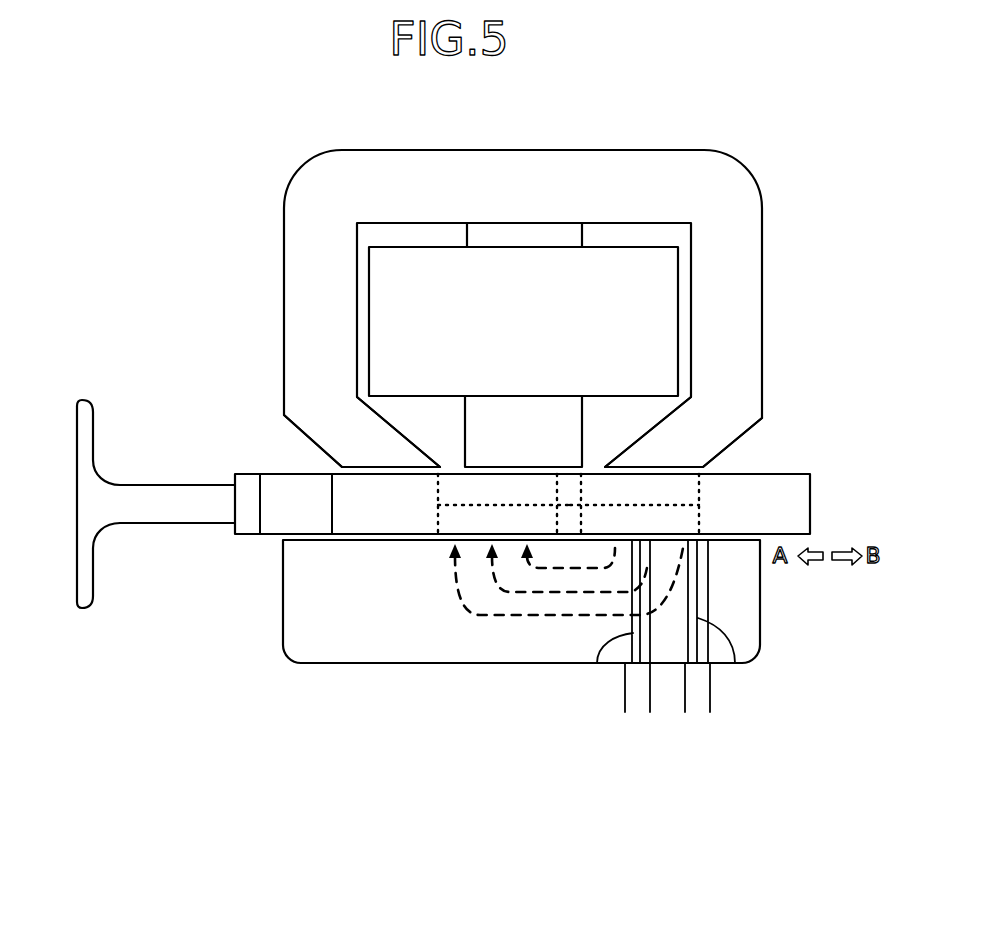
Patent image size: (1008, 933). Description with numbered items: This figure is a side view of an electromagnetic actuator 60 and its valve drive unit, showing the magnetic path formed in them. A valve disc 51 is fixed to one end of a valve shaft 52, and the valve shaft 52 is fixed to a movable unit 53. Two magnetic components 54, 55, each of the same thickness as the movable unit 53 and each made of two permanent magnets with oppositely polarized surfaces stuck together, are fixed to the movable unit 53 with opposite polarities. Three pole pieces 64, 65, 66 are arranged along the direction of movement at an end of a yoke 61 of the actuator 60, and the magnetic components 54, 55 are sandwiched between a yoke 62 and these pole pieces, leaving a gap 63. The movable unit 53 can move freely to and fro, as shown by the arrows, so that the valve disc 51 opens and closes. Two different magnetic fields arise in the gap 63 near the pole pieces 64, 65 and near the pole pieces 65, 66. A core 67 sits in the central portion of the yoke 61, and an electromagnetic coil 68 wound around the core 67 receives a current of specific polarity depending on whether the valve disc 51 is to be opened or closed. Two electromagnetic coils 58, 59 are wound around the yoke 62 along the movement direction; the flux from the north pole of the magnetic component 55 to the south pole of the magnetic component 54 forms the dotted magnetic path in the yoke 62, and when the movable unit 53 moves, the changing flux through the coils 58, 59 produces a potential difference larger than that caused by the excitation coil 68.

The valve disc 51 is at (82, 400).
The valve shaft 52 is at (165, 508).
The movable unit 53 is at (268, 517).
The magnetic component 54 is at (452, 518).
The magnetic component 55 is at (600, 518).
The electromagnetic coil 58 is at (735, 663).
The electromagnetic coil 59 is at (596, 663).
The actuator 60 is at (727, 138).
The yoke 61 is at (643, 163).
The yoke 62 is at (317, 630).
The gap 63 is at (722, 467).
The pole piece 64 is at (368, 463).
The pole piece 65 is at (487, 463).
The pole piece 66 is at (673, 463).
The core 67 is at (550, 237).
The electromagnetic coil 68 is at (380, 295).